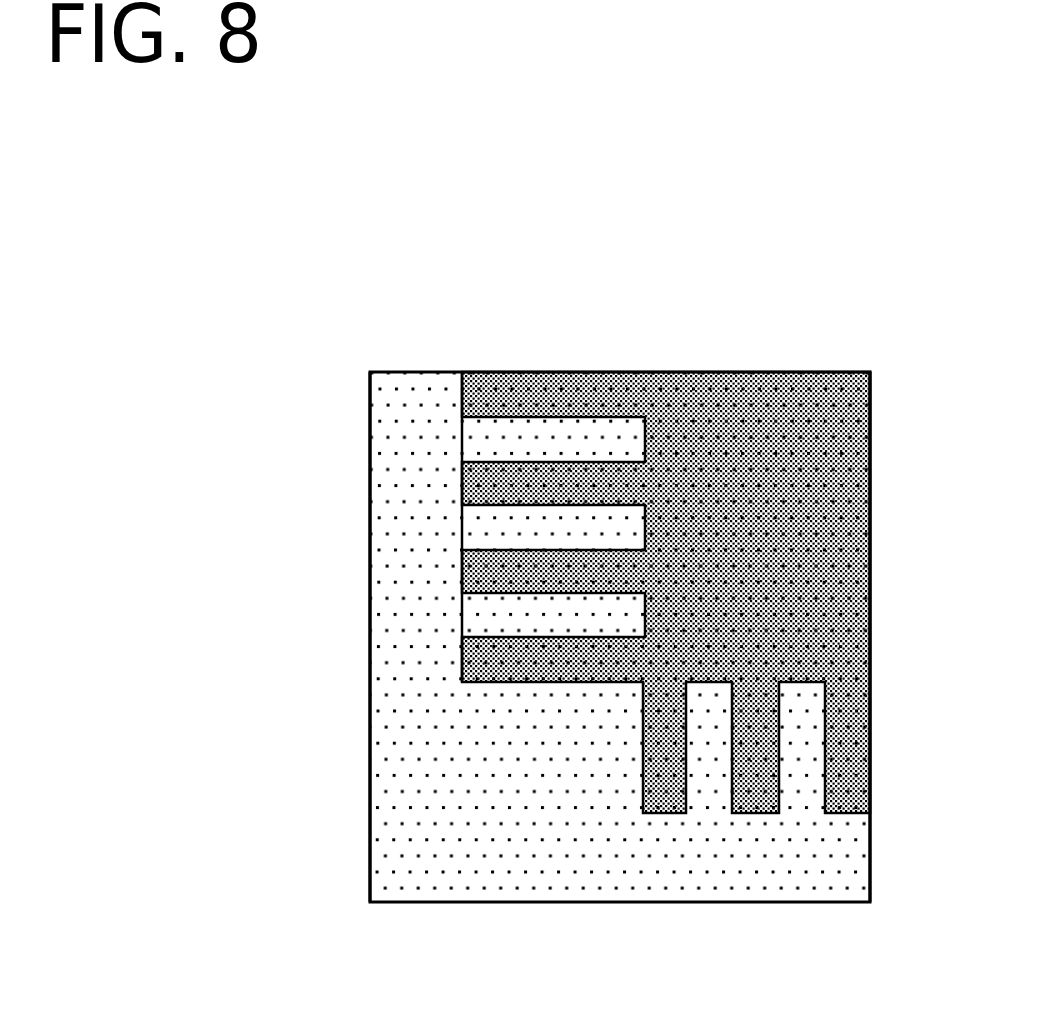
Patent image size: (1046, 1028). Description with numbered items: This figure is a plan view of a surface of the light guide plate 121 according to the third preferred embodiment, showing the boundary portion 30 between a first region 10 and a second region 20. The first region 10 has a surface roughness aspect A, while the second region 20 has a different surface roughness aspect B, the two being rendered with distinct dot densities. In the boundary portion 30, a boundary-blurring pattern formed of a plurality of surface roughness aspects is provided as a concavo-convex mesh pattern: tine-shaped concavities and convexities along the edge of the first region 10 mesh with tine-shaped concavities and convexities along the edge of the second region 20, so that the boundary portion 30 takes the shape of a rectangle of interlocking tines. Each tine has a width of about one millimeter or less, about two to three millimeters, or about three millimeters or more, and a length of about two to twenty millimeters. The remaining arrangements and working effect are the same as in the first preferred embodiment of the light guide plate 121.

The light guide plate 121 is at (692, 278).
The first region 10 is at (462, 371).
The boundary portion 30 is at (645, 371).
The second region 20 is at (870, 371).
The surface roughness aspect A is at (571, 882).
The surface roughness aspect B is at (860, 458).